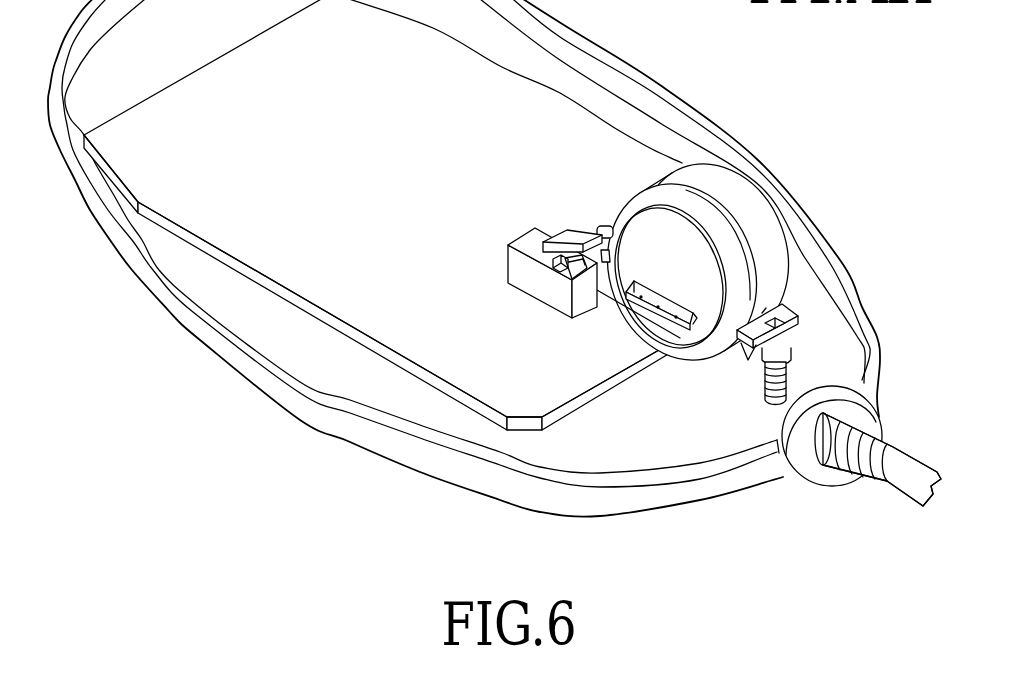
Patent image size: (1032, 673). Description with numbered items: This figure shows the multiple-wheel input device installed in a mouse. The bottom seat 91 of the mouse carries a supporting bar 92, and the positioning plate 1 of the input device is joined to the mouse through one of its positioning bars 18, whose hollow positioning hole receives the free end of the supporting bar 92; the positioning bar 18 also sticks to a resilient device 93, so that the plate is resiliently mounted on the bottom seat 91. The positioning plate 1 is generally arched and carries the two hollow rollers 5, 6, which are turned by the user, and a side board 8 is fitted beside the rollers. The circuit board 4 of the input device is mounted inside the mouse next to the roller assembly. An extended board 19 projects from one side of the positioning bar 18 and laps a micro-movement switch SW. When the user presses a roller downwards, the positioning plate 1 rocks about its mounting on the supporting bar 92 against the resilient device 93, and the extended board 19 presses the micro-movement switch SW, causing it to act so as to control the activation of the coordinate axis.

The positioning plate 1 is at (747, 247).
The circuit board 4 is at (635, 307).
The hollow roller 5 is at (731, 193).
The hollow roller 6 is at (633, 198).
The side board 8 is at (613, 222).
The positioning bar 18 is at (790, 312).
The extended board 19 is at (578, 237).
The bottom seat 91 is at (442, 473).
The supporting bar 92 is at (772, 396).
The resilient device 93 is at (763, 372).
The micro-movement switch sw is at (517, 267).